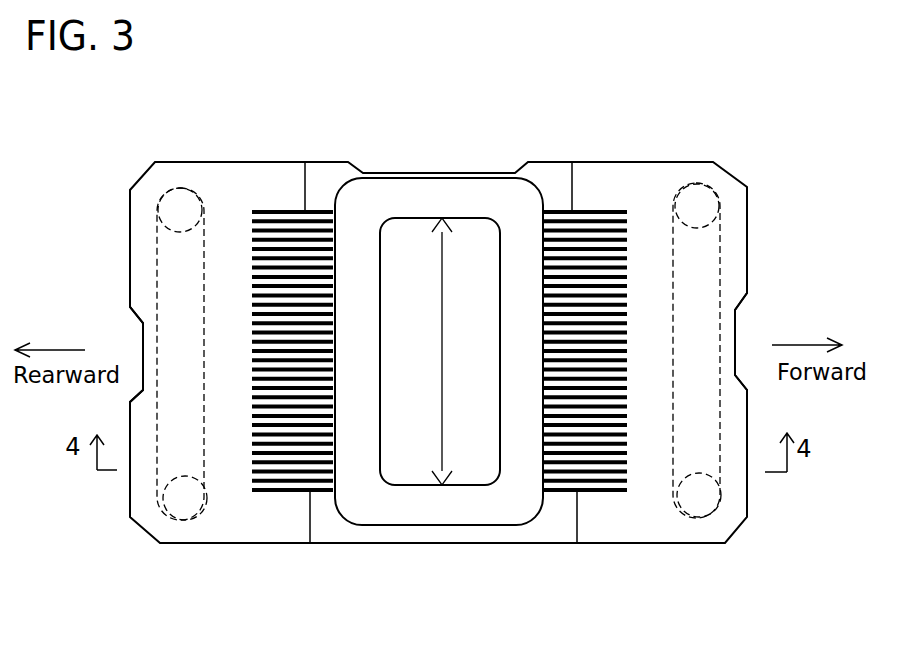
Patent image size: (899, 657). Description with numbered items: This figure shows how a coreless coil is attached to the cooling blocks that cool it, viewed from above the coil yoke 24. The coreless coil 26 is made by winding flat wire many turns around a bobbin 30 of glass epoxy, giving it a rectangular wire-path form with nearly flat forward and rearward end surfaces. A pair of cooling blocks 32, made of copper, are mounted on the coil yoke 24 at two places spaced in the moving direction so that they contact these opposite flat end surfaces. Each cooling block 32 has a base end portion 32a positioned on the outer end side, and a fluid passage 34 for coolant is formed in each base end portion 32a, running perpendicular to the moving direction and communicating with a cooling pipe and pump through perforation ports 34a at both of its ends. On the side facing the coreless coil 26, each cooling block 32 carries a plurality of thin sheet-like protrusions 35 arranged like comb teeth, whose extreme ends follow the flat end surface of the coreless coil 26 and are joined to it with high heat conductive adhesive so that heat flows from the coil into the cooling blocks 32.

The coil yoke 24 is at (348, 531).
The coreless coil 26 is at (482, 195).
The bobbin 30 is at (412, 245).
The cooling block 32 is at (232, 197).
The base end portion 32a is at (142, 488).
The fluid passage 34 is at (165, 270).
The perforation port 34a is at (178, 208).
The sheet-like protrusion 35 is at (322, 214).